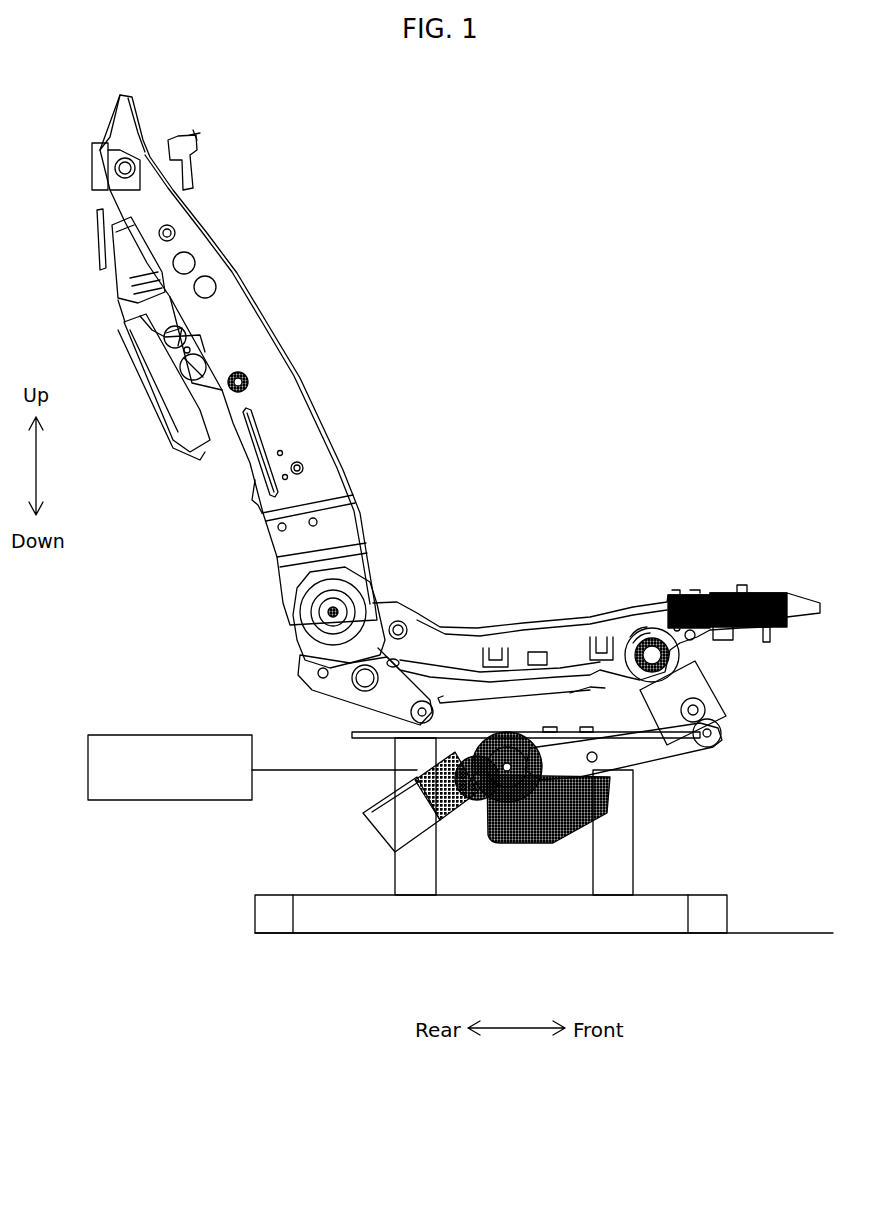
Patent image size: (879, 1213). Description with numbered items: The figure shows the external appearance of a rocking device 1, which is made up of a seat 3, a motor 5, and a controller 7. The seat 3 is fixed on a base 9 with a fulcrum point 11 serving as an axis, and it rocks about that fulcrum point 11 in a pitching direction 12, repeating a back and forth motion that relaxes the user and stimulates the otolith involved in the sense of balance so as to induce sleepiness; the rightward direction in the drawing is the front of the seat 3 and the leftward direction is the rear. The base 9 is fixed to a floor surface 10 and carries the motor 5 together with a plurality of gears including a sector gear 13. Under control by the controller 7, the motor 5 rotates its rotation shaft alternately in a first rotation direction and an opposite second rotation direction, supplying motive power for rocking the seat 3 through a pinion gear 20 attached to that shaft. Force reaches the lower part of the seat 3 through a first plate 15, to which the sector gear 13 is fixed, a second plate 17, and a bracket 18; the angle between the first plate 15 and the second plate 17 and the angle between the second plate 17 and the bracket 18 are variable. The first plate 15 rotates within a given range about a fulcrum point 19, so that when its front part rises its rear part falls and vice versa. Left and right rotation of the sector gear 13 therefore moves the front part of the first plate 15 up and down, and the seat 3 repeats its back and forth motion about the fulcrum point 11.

The rocking device 1 is at (714, 98).
The seat 3 is at (418, 612).
The motor 5 is at (367, 823).
The controller 7 is at (198, 735).
The base 9 is at (635, 851).
The floor surface 10 is at (793, 933).
The fulcrum point 11 is at (414, 716).
The pitching direction 12 is at (126, 67).
The sector gear 13 is at (512, 800).
The first plate 15 is at (668, 750).
The second plate 17 is at (707, 707).
The bracket 18 is at (693, 665).
The fulcrum point 19 is at (597, 757).
The pinion gear 20 is at (473, 800).